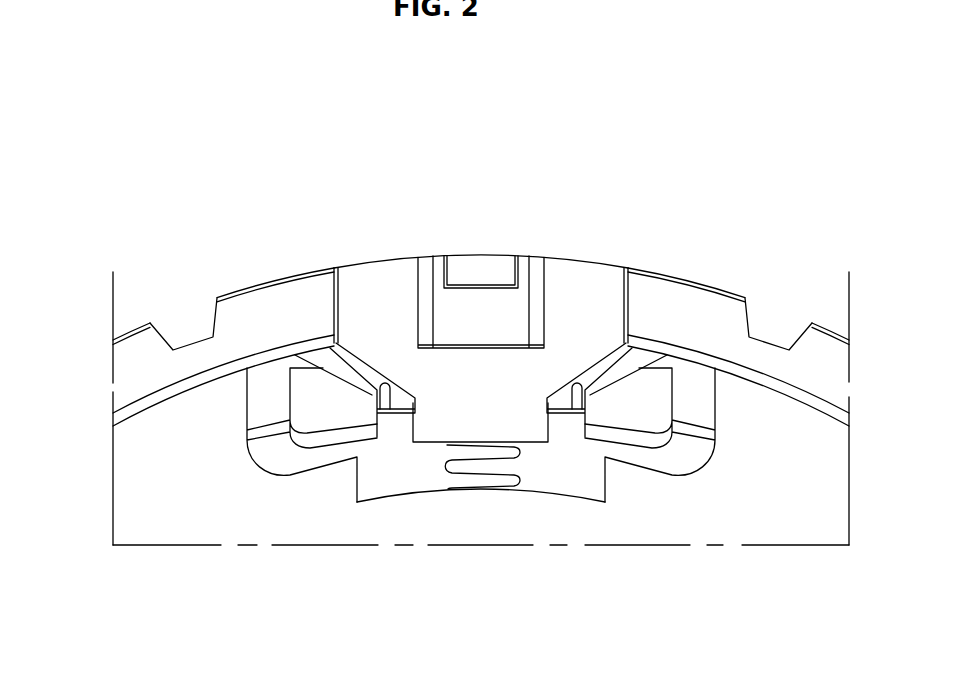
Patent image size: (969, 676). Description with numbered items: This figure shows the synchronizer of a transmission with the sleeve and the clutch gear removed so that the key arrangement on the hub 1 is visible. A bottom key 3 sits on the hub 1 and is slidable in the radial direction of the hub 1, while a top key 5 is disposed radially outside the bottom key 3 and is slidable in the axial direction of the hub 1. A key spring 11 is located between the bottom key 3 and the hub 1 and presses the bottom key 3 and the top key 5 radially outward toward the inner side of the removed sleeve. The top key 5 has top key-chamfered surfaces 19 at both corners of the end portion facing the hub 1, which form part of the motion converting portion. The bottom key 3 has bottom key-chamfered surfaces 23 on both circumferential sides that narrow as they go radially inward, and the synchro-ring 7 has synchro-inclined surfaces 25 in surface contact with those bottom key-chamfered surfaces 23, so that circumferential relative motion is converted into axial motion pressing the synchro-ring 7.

The hub 1 is at (152, 488).
The bottom key 3 is at (380, 300).
The top key 5 is at (477, 320).
The synchro-ring 7 is at (267, 390).
The key spring 11 is at (470, 478).
The top key-chamfered surfaces 19 is at (426, 262).
The bottom key-chamfered surfaces 23 is at (343, 376).
The synchro-inclined surfaces 25 is at (383, 385).